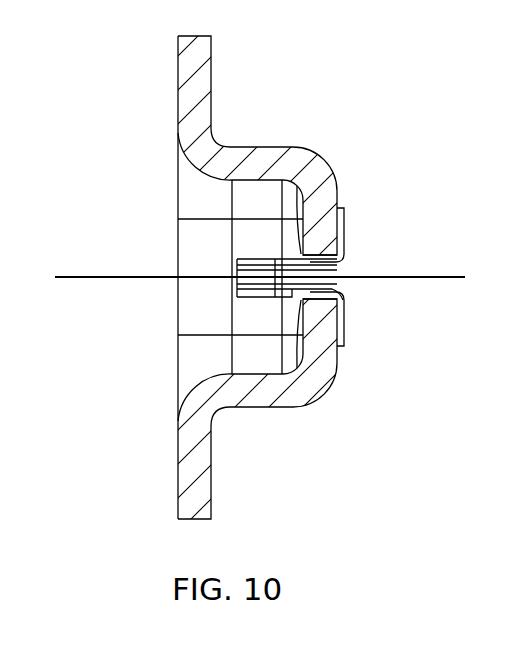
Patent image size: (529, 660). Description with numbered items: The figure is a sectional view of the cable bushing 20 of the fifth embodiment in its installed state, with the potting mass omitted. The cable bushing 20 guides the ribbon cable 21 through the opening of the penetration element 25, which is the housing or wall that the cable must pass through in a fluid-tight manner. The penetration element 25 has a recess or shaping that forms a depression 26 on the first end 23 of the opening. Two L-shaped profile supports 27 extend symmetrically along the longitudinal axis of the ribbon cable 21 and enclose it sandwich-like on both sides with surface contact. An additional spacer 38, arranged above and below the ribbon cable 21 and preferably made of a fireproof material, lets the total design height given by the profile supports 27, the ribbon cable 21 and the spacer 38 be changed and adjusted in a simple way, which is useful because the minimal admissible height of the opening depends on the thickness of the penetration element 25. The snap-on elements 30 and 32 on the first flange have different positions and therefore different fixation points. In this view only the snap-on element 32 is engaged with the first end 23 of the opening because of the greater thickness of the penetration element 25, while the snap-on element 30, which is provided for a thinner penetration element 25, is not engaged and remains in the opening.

The cable bushing 20 is at (335, 78).
The ribbon cable 21 is at (73, 277).
The first end of the opening 23 is at (250, 307).
The penetration element 25 is at (187, 487).
The depression 26 is at (247, 343).
The profile supports 27 is at (343, 236).
The snap-on element 30 is at (318, 230).
The snap-on element 32 is at (297, 212).
The spacer 38 is at (255, 288).